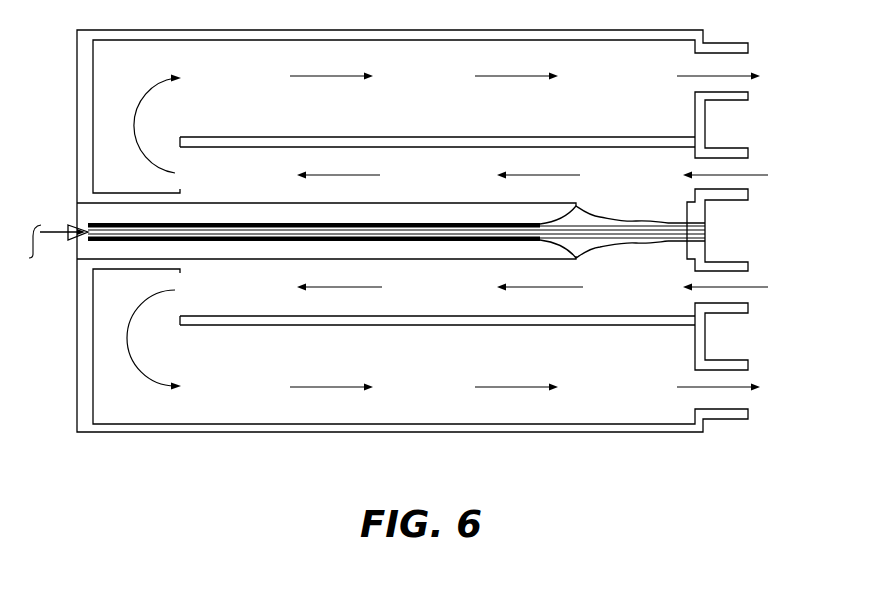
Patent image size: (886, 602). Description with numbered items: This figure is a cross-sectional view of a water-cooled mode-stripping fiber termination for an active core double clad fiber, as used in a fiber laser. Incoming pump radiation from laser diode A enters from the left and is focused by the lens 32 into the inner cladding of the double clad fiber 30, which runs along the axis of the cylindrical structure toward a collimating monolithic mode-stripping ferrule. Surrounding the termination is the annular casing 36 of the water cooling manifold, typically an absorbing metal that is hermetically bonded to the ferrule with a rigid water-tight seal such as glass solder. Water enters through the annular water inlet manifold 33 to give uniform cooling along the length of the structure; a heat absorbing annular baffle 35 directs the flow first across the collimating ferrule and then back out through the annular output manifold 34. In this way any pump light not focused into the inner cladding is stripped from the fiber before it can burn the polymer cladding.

The double clad fiber 30 is at (448, 223).
The lens 32 is at (76, 224).
The annular water inlet manifold 33 is at (771, 180).
The annular output manifold 34 is at (764, 80).
The heat absorbing annular baffle 35 is at (447, 321).
The annular casing 36 is at (258, 425).